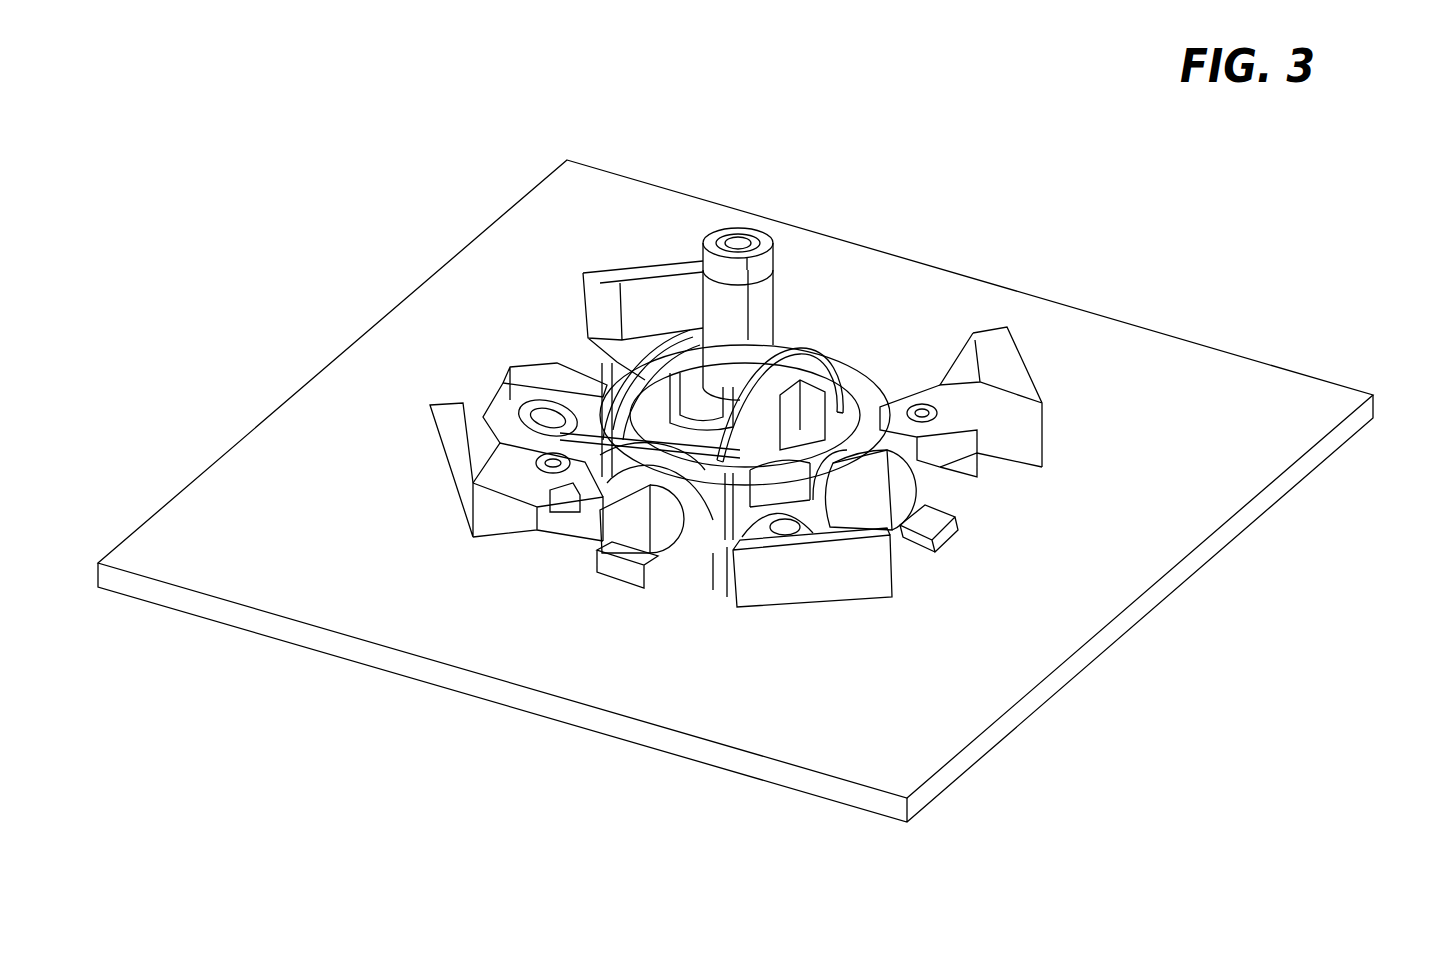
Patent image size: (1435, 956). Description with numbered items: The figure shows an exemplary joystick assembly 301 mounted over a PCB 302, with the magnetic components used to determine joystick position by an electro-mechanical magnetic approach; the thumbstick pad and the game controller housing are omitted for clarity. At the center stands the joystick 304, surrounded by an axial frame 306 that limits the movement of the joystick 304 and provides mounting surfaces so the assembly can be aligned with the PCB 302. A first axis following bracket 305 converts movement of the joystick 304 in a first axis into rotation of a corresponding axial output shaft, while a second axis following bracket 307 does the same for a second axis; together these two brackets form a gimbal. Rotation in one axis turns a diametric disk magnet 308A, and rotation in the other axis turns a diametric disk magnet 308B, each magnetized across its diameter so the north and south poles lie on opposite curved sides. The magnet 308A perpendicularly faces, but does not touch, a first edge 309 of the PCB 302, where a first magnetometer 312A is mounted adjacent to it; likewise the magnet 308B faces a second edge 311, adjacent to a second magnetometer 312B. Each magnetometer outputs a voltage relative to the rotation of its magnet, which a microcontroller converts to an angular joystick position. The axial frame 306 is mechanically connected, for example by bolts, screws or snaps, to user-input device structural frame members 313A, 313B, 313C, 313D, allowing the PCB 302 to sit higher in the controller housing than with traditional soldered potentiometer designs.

The joystick assembly 301 is at (528, 238).
The PCB 302 is at (1368, 406).
The joystick 304 is at (762, 248).
The first axis following bracket 305 is at (838, 345).
The axial frame 306 is at (862, 410).
The second axis following bracket 307 is at (820, 434).
The magnet 308A is at (905, 473).
The magnet 308B is at (640, 490).
The first edge 309 is at (893, 533).
The second edge 311 is at (700, 568).
The first magnetometer 312A is at (926, 516).
The second magnetometer 312B is at (627, 557).
The user-input device structural frame member 313A is at (810, 595).
The user-input device structural frame member 313B is at (1015, 374).
The user-input device structural frame member 313C is at (674, 278).
The user-input device structural frame member 313D is at (455, 463).